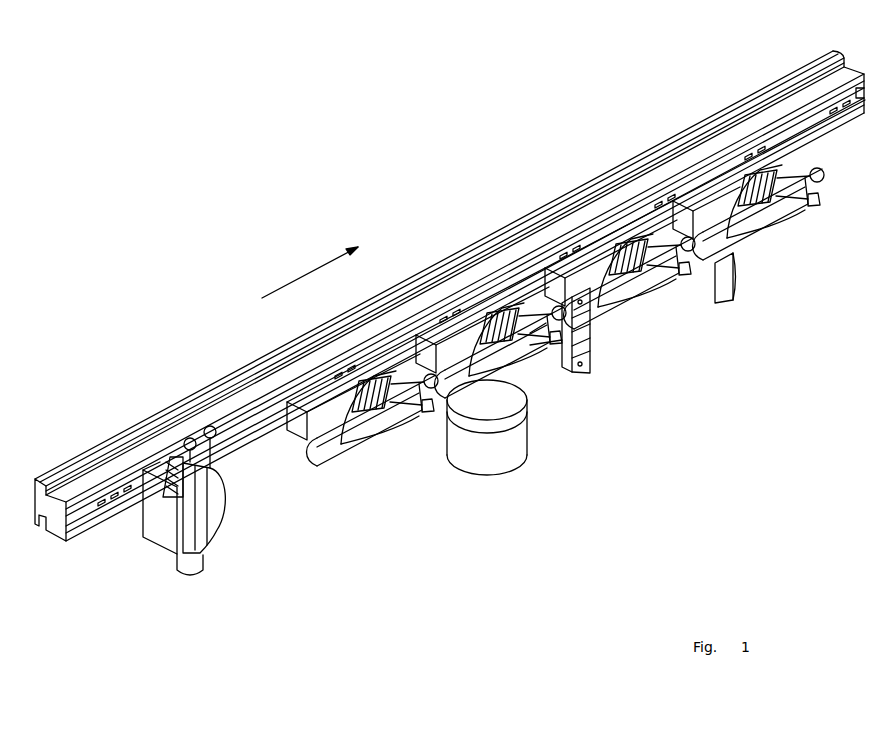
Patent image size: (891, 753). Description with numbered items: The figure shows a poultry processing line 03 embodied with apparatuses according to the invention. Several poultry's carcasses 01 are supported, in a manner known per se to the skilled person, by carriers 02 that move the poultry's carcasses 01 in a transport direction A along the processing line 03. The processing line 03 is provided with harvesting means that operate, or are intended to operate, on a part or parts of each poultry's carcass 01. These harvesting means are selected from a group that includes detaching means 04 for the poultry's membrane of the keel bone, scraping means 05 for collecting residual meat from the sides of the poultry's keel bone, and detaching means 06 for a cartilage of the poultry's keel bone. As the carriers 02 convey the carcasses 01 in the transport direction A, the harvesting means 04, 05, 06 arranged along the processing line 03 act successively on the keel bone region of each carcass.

The poultry's carcass 01 is at (222, 537).
The carrier 02 is at (465, 328).
The processing line 03 is at (565, 193).
The detaching means for the poultry's membrane of the keel bone 04 is at (530, 463).
The scraping means 05 is at (592, 355).
The detaching means for a cartilage of the poultry's keel bone 06 is at (736, 278).
The transport direction A is at (296, 279).